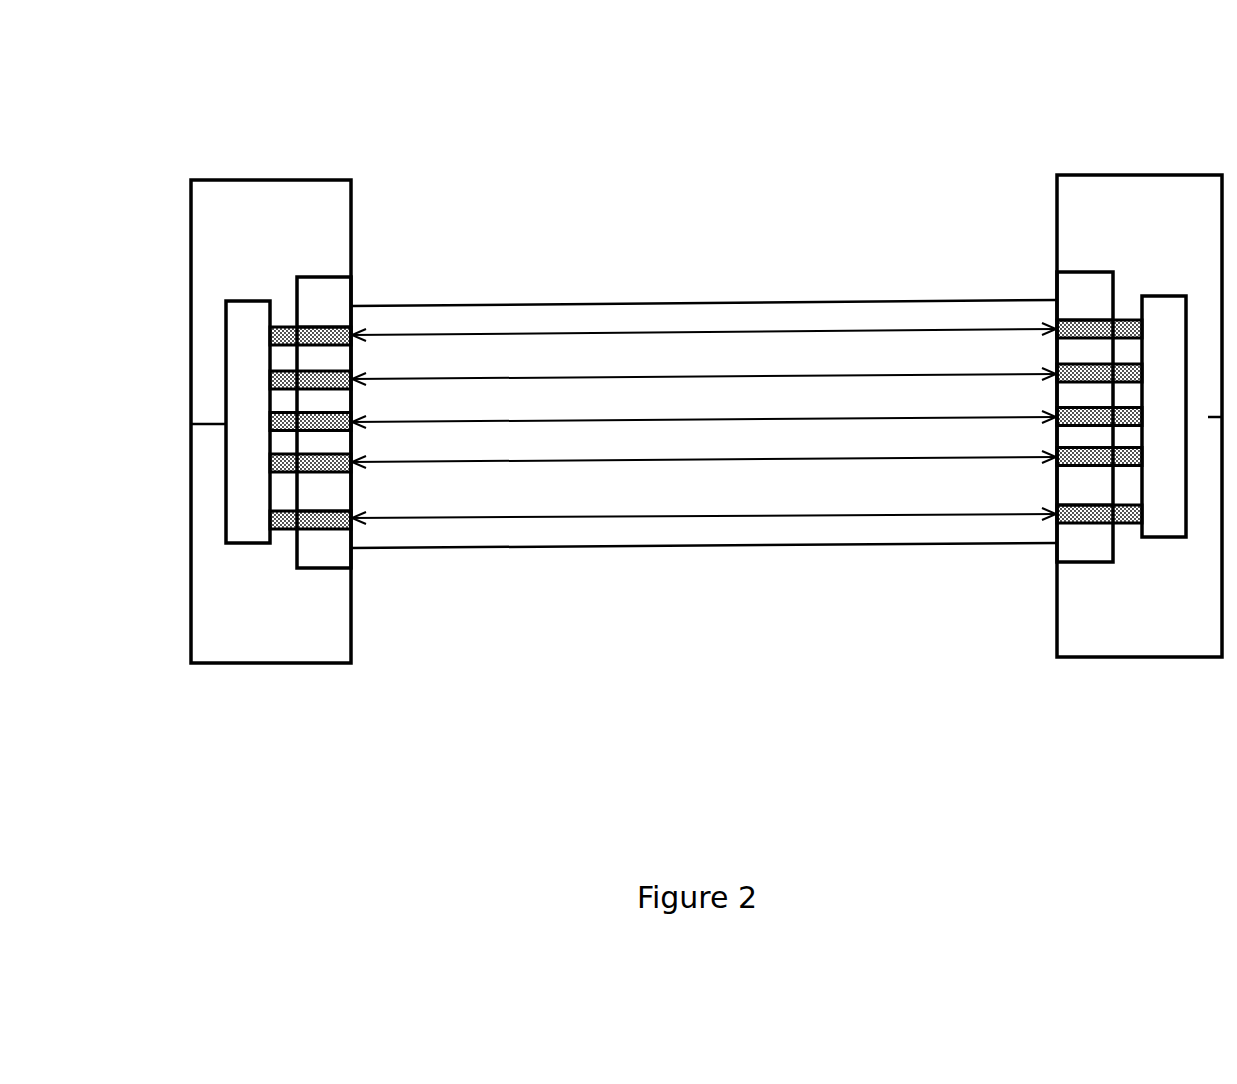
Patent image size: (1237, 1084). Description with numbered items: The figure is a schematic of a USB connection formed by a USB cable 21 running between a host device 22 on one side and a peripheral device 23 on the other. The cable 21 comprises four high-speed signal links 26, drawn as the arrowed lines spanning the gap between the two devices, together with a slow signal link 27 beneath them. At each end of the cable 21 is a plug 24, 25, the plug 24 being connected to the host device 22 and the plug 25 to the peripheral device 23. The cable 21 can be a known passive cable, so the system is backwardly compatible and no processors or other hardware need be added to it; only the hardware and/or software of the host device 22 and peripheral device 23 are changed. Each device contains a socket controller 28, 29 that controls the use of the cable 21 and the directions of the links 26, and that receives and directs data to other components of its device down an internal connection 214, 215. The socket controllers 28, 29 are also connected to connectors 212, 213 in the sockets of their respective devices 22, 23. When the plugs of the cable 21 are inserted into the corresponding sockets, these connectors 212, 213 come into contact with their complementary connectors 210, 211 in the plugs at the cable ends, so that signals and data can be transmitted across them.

The USB cable 21 is at (640, 303).
The host device 22 is at (272, 180).
The peripheral device 23 is at (1137, 175).
The plug 24 is at (323, 277).
The plug 25 is at (1090, 272).
The high-speed signal links 26 is at (540, 460).
The slow signal link 27 is at (657, 515).
The socket controller 28 is at (253, 543).
The socket controller 29 is at (1165, 537).
The complementary connectors 210 is at (322, 345).
The complementary connectors 211 is at (1090, 338).
The connectors 212 is at (283, 345).
The connectors 213 is at (1125, 338).
The internal connection 214 is at (210, 424).
The internal connection 215 is at (1208, 417).